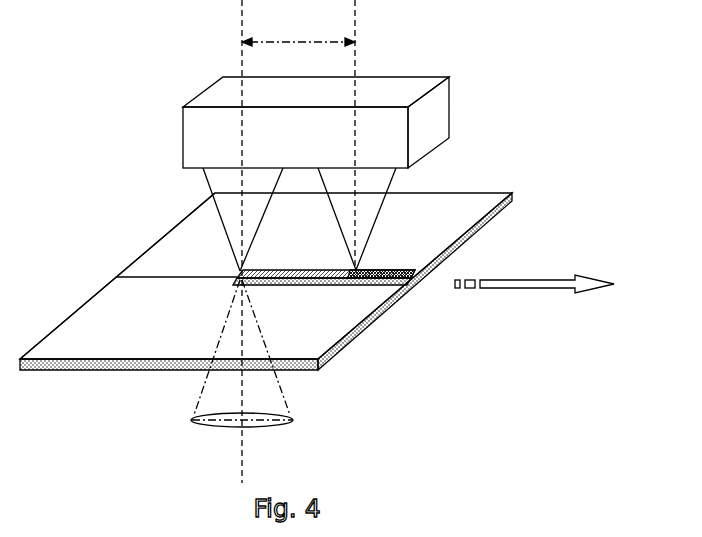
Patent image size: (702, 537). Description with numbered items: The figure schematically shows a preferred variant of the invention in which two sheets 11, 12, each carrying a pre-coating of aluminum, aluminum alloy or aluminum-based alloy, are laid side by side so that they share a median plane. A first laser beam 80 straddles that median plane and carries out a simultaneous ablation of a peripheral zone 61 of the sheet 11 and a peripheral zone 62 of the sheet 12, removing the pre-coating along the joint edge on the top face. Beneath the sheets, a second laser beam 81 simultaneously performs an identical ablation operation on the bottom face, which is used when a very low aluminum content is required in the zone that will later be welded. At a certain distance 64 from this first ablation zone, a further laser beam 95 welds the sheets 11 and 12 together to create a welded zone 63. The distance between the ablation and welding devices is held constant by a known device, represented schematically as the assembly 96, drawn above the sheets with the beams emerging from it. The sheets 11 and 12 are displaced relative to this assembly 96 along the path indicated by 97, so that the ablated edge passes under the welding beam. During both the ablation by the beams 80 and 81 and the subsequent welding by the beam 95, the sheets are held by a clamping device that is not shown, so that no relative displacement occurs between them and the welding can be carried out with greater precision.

The sheet 11 is at (118, 350).
The sheet 12 is at (165, 245).
The peripheral zone 61 is at (333, 283).
The peripheral zone 62 is at (335, 267).
The welded zone 63 is at (403, 284).
The distance 64 is at (298, 29).
The first laser beam 80 is at (227, 228).
The second laser beam 81 is at (277, 384).
The laser beam 95 is at (368, 220).
The device 96 is at (230, 92).
The path 97 is at (534, 267).